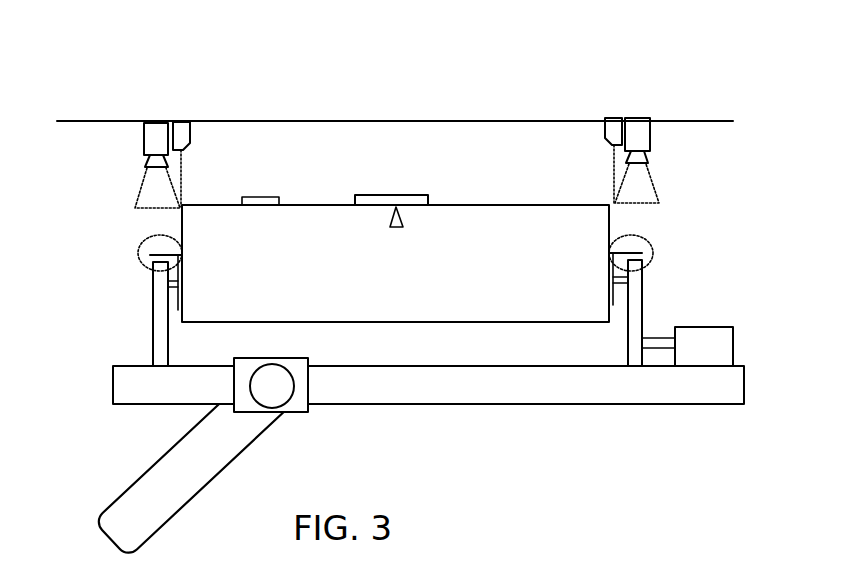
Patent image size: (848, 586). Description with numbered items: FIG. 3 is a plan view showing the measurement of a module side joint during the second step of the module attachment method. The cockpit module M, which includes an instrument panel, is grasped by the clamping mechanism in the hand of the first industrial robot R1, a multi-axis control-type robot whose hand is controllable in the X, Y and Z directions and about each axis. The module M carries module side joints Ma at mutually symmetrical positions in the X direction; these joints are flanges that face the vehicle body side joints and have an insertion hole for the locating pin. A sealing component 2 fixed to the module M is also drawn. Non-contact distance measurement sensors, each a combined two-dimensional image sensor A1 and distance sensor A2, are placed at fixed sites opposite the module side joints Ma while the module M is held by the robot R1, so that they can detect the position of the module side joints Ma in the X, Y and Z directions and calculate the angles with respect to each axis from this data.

The two-dimensional image sensor A1 is at (158, 128).
The distance sensor A2 is at (179, 130).
The sealing component 2 is at (365, 195).
The cockpit module M is at (458, 200).
The module side joint Ma is at (162, 257).
The first industrial robot R1 is at (186, 426).